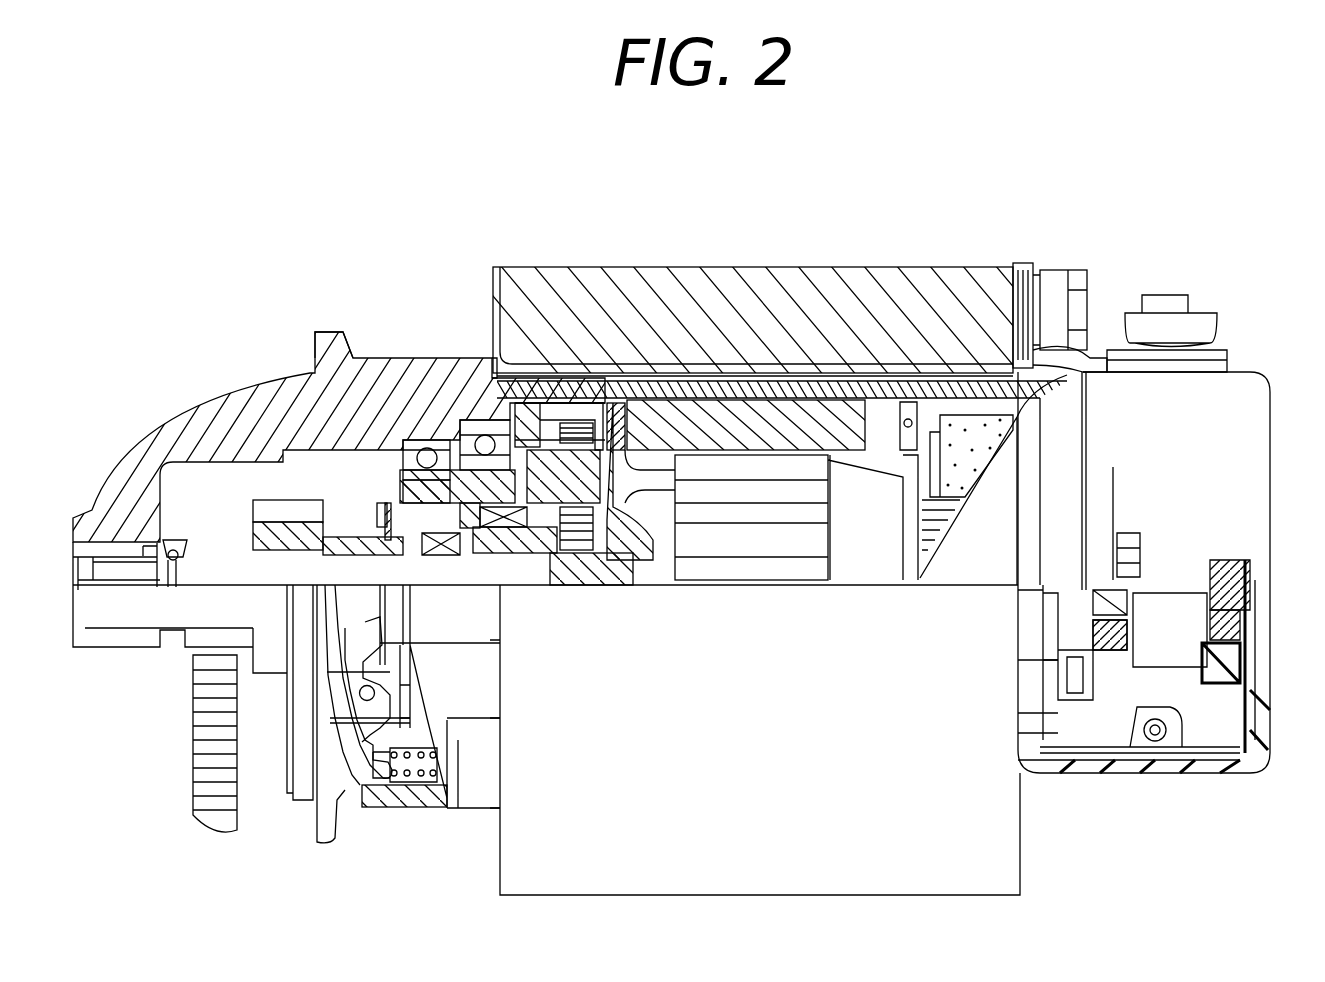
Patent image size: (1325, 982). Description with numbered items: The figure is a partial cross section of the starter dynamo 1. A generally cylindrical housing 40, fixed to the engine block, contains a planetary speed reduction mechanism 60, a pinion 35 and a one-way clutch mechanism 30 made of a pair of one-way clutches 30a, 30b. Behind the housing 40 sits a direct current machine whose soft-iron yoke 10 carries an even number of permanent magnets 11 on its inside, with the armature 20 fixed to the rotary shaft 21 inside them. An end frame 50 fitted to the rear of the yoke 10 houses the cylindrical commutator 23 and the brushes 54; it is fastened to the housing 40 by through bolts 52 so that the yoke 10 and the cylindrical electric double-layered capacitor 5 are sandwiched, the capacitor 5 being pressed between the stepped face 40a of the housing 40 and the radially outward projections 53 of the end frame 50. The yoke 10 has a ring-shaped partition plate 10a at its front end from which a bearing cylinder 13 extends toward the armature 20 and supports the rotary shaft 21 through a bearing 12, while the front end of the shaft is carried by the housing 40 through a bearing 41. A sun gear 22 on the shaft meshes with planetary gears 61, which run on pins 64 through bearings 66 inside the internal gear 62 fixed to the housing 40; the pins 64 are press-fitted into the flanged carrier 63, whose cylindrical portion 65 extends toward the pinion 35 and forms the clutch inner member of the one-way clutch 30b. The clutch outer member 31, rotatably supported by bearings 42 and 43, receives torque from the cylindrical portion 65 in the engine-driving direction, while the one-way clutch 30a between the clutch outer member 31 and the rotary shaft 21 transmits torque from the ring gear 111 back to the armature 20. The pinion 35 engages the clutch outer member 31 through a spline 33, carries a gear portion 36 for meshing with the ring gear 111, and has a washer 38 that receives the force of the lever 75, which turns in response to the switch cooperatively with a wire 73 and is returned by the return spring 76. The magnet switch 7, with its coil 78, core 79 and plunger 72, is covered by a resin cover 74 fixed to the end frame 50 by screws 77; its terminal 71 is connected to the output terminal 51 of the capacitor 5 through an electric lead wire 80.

The starter dynamo 1 is at (730, 749).
The electric double-layered capacitor 5 is at (778, 288).
The magnet switch 7 is at (1146, 543).
The yoke 10 is at (787, 299).
The partition plate 10a is at (782, 300).
The permanent magnets 11 is at (744, 325).
The bearing 12 is at (652, 523).
The bearing cylinder 13 is at (673, 306).
The armature 20 is at (796, 525).
The rotary shaft 21 is at (567, 602).
The sun gear 22 is at (571, 611).
The commutator 23 is at (1003, 500).
The one-way clutch mechanism 30 is at (354, 377).
The one-way clutch 30a is at (380, 416).
The one-way clutch 30b is at (457, 399).
The clutch outer member 31 is at (289, 387).
The spline 33 is at (295, 432).
The pinion 35 is at (147, 482).
The gear portion 36 is at (231, 442).
The washer 38 is at (312, 410).
The housing 40 is at (334, 314).
The stepped face 40a is at (524, 271).
The bearing 41 is at (116, 503).
The bearing 42 is at (420, 400).
The bearing 43 is at (485, 334).
The end frame 50 is at (1009, 284).
The output terminal 51 is at (1061, 281).
The through bolts 52 is at (1076, 712).
The projections 53 is at (1045, 727).
The brushes 54 is at (967, 375).
The planetary speed reduction mechanism 60 is at (560, 551).
The planetary gears 61 is at (577, 323).
The internal gear 62 is at (574, 357).
The carrier 63 is at (569, 325).
The pins 64 is at (619, 303).
The cylindrical portion 65 is at (440, 749).
The bearings 66 is at (548, 579).
The terminal 71 is at (1167, 307).
The plunger 72 is at (1224, 623).
The wire 73 is at (1181, 769).
The resin cover 74 is at (1166, 666).
The lever 75 is at (342, 744).
The return spring 76 is at (398, 812).
The screws 77 is at (1216, 522).
The coil 78 is at (1204, 593).
The core 79 is at (1251, 651).
The electric lead wire 80 is at (1089, 303).
The ring gear 111 is at (215, 777).